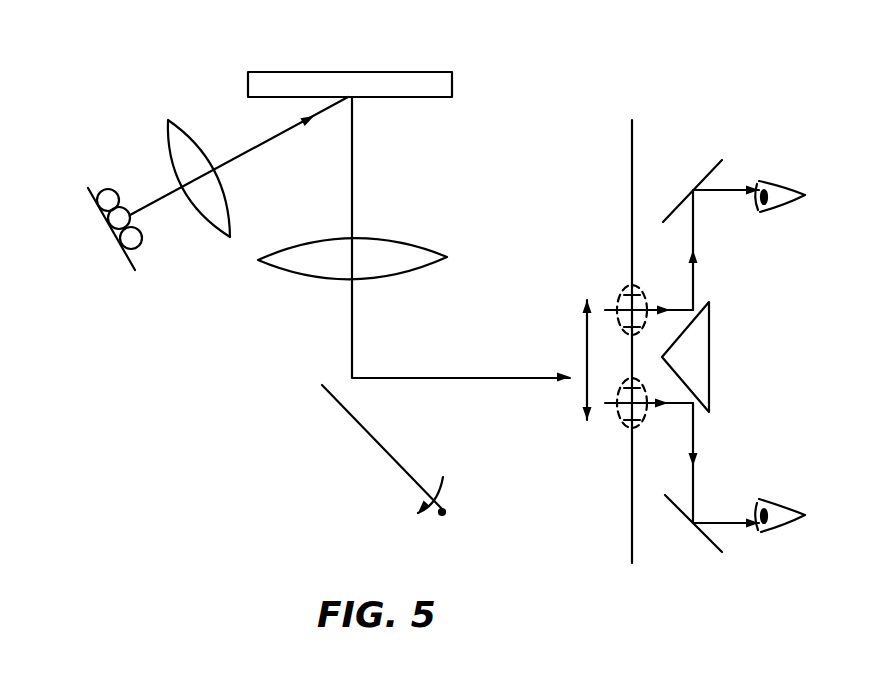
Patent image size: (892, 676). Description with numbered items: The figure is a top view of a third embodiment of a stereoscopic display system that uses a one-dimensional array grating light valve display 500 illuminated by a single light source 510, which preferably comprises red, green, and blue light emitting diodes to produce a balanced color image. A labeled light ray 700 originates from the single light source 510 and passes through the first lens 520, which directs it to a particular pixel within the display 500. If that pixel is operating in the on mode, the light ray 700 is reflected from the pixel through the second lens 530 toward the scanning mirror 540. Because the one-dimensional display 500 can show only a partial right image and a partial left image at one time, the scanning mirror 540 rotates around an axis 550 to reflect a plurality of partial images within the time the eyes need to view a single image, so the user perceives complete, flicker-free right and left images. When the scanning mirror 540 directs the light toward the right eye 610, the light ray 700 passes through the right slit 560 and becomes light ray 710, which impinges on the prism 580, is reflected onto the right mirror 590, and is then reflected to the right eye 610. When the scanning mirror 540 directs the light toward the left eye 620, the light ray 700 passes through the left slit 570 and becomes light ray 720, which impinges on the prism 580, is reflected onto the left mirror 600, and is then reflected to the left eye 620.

The display 500 is at (340, 71).
The single light source 510 is at (100, 212).
The first lens 520 is at (168, 143).
The second lens 530 is at (430, 243).
The scanning mirror 540 is at (372, 437).
The axis 550 is at (447, 510).
The right slit 560 is at (623, 292).
The left slit 570 is at (622, 423).
The prism 580 is at (710, 348).
The right mirror 590 is at (703, 178).
The left mirror 600 is at (702, 540).
The right eye 610 is at (797, 170).
The left eye 620 is at (790, 512).
The light ray 700 is at (312, 123).
The light ray 710 is at (698, 250).
The light ray 720 is at (698, 462).